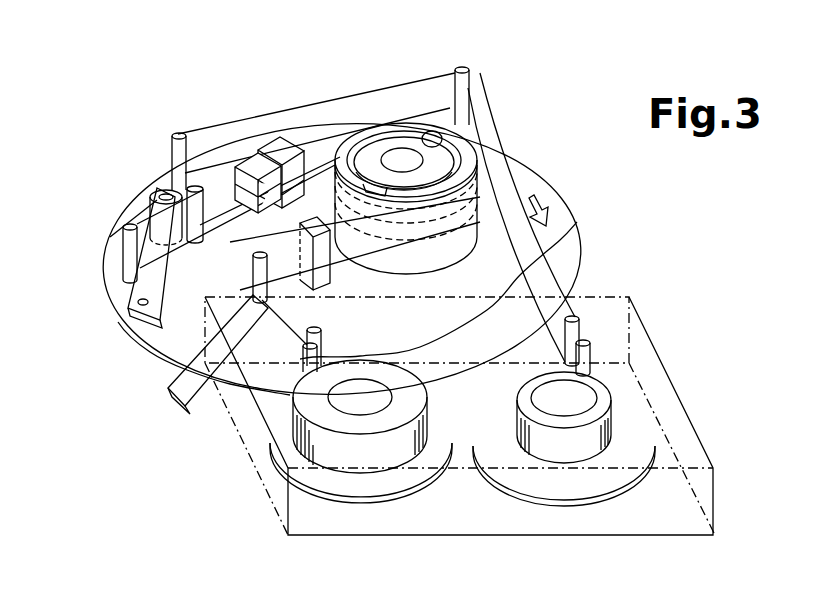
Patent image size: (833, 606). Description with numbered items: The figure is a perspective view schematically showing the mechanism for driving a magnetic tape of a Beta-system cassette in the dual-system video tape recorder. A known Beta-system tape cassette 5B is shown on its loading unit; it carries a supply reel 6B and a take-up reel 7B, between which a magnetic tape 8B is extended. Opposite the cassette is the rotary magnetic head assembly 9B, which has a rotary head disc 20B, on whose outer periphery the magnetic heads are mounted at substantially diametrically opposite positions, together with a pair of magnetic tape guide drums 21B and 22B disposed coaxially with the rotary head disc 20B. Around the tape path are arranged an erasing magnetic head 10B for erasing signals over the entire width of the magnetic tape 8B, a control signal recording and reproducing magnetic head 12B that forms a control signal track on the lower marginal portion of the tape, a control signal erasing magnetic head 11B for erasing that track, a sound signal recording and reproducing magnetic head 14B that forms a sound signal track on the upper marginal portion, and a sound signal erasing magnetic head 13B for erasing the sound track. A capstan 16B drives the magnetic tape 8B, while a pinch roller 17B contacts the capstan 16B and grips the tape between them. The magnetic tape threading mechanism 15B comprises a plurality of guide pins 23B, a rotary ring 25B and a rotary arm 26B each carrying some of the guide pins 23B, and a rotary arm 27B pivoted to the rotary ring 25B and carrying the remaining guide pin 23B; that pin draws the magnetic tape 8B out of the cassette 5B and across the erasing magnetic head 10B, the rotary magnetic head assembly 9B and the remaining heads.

The β system tape cassette 5B is at (697, 448).
The supply reel 6B is at (433, 440).
The take-up reel 7B is at (533, 396).
The magnetic tape 8B is at (478, 222).
The rotary magnetic head assembly 9B is at (474, 324).
The erasing magnetic head 10B is at (306, 222).
The control signal erasing magnetic head 11B is at (318, 190).
The control signal recording and reproducing magnetic head 12B is at (194, 186).
The sound signal erasing magnetic head 13B is at (270, 152).
The sound signal recording and reproducing magnetic head 14B is at (240, 158).
The magnetic tape threading mechanism 15B is at (131, 187).
The capstan 16B is at (193, 183).
The pinch roller 17B is at (168, 192).
The rotary head disc 20B is at (358, 223).
The magnetic tape guide drum 21B is at (397, 122).
The magnetic tape guide drum 22B is at (450, 260).
The guide pins 23B is at (178, 132).
The rotary ring 25B is at (567, 235).
The rotary arm 26B is at (190, 379).
The rotary arm 27B is at (163, 281).